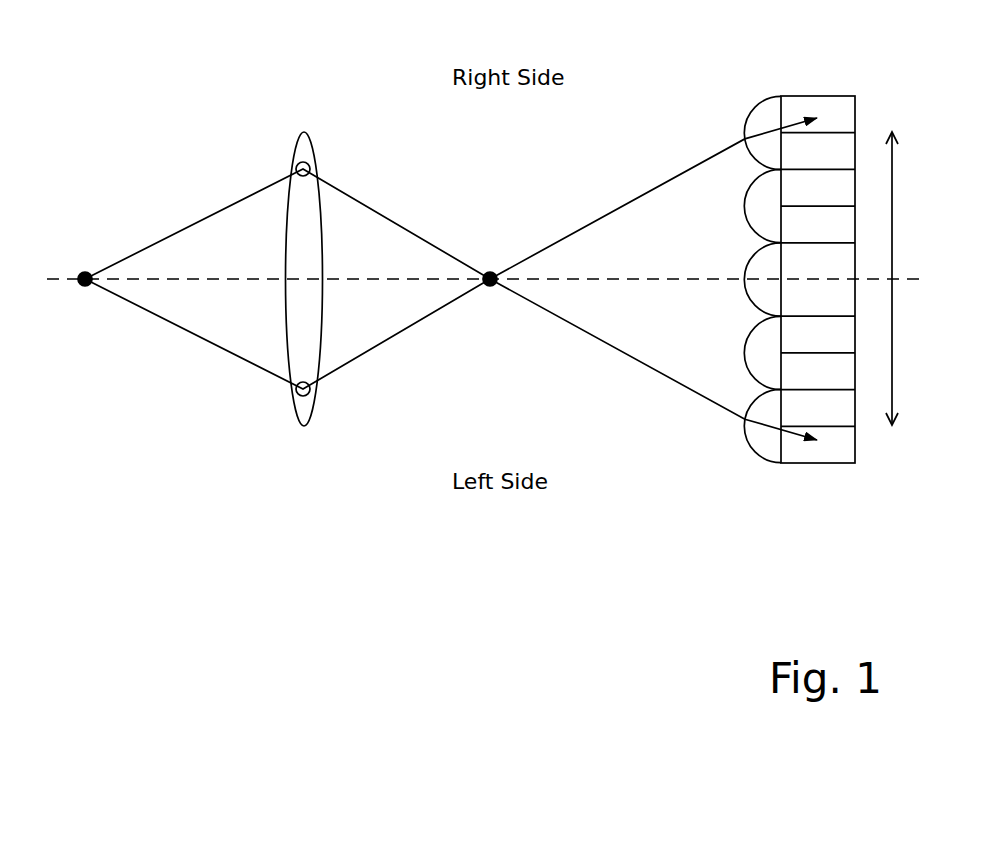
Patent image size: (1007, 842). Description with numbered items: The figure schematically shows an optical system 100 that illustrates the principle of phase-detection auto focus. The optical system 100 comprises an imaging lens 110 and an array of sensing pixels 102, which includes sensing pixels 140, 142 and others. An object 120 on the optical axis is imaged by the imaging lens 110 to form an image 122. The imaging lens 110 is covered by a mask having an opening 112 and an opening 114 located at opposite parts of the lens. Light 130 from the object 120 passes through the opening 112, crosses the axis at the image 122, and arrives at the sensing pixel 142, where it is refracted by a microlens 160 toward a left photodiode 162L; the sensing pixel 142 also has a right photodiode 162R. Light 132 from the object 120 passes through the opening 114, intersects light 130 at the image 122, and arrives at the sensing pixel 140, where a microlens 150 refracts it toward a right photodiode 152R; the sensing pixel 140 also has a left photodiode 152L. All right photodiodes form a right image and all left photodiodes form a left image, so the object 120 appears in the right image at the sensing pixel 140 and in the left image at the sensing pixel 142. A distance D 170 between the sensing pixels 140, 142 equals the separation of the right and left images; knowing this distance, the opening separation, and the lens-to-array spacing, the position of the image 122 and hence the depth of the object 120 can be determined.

The optical system 100 is at (226, 50).
The array of sensing pixels 102 is at (763, 55).
The imaging lens 110 is at (343, 262).
The opening 112 is at (310, 166).
The opening 114 is at (312, 396).
The object 120 is at (79, 274).
The image 122 is at (491, 286).
The light 130 is at (212, 213).
The light 132 is at (222, 348).
The sensing pixel 140 is at (858, 277).
The sensing pixel 142 is at (806, 468).
The microlens 150 is at (733, 283).
The right photodiode 152R is at (856, 112).
The left photodiode 152L is at (817, 150).
The microlens 160 is at (761, 457).
The right photodiode 162R is at (815, 407).
The left photodiode 162L is at (856, 446).
The distance D 170 is at (893, 222).